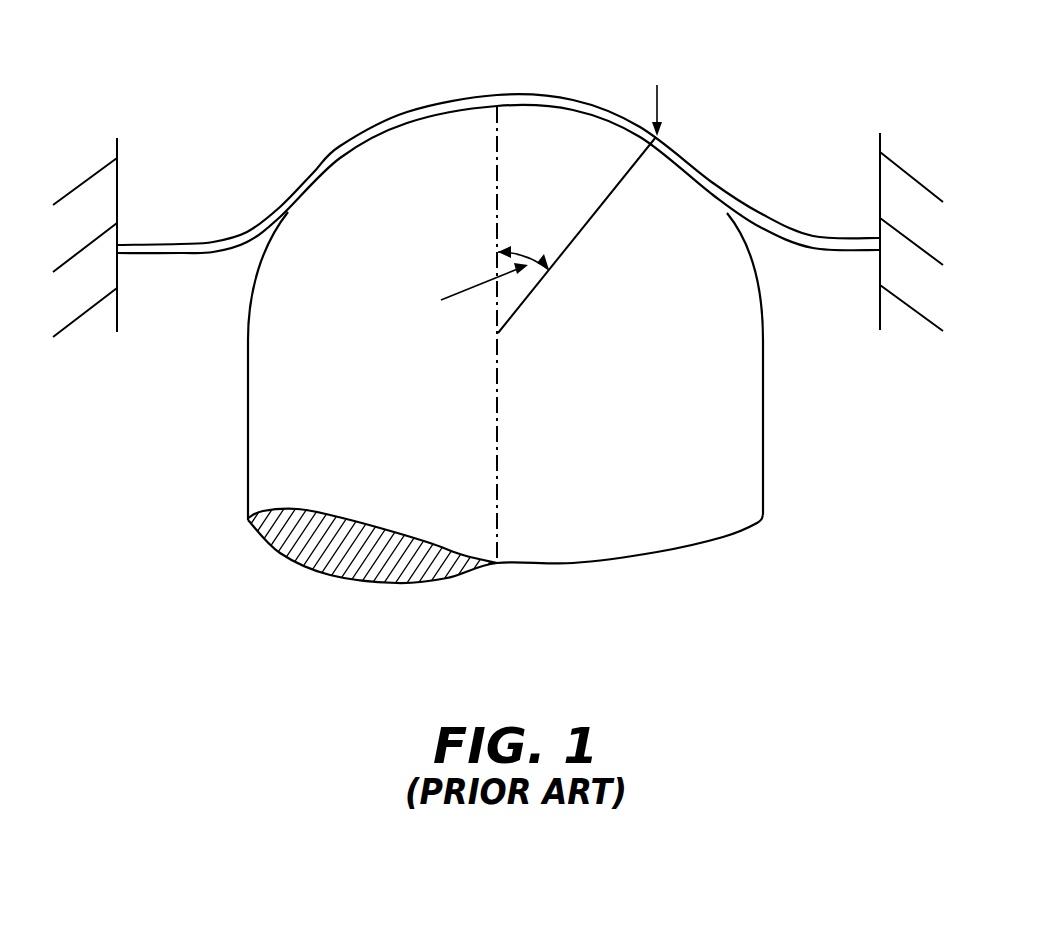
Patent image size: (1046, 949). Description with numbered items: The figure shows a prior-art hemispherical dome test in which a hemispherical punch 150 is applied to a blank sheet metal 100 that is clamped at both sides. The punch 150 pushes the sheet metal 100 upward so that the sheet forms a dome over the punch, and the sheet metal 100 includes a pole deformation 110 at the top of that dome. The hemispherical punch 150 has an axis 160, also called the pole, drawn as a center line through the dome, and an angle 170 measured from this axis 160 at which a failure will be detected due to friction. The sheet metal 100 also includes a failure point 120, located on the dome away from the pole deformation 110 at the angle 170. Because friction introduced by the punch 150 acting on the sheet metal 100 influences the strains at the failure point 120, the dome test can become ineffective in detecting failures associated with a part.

The blank sheet metal 100 is at (211, 244).
The pole deformation 110 is at (498, 94).
The failure point 120 is at (660, 134).
The hemispherical punch 150 is at (573, 565).
The axis 160 is at (496, 152).
The angle 170 is at (524, 258).